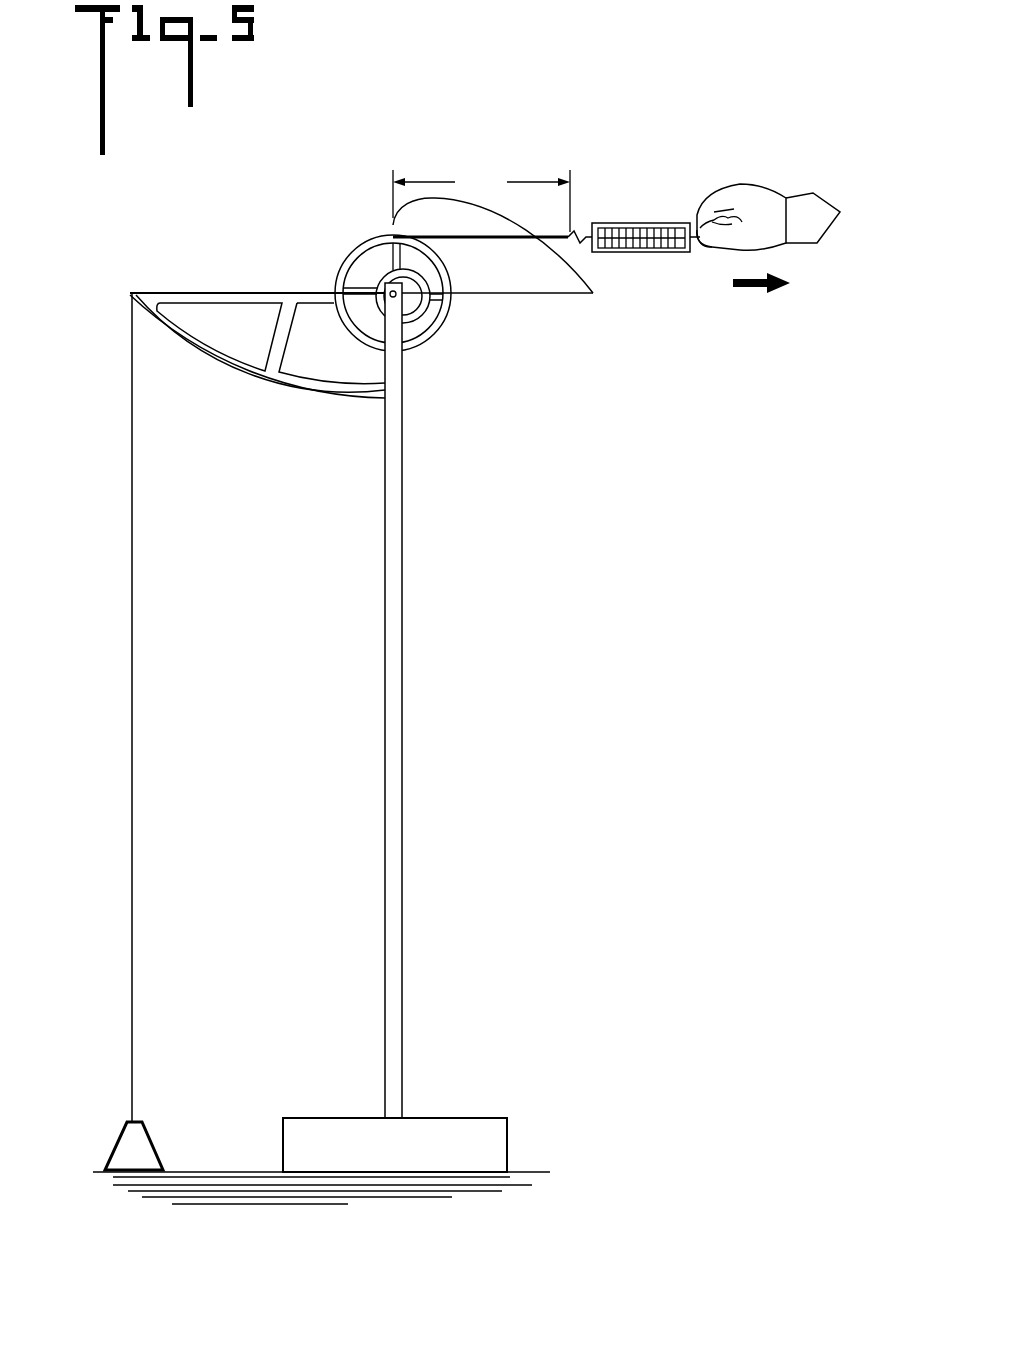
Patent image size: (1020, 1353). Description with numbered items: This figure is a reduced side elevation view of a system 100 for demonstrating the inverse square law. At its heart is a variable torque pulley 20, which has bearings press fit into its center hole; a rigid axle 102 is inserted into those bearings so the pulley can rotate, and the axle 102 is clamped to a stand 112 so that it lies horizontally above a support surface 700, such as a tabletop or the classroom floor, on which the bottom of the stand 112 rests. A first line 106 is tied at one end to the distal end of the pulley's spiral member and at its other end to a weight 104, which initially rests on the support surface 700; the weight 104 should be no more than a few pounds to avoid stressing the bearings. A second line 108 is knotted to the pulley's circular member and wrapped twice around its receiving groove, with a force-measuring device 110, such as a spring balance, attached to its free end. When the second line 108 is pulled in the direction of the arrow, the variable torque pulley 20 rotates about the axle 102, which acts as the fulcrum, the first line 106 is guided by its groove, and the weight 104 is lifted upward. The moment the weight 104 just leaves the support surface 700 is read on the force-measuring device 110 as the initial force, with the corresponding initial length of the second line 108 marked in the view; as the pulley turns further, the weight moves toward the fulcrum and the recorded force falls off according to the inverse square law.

The system for demonstrating the inverse square law 100 is at (570, 93).
The variable torque pulley 20 is at (260, 236).
The axle 102 is at (396, 297).
The weight 104 is at (130, 1153).
The first line 106 is at (130, 815).
The second line 108 is at (492, 240).
The force-measuring device 110 is at (640, 253).
The stand 112 is at (393, 748).
The support surface 700 is at (388, 1202).